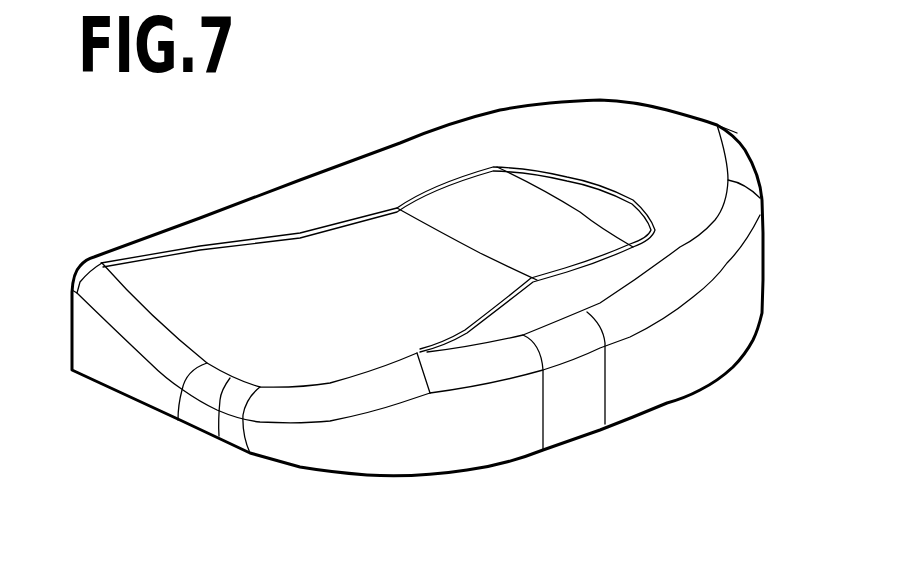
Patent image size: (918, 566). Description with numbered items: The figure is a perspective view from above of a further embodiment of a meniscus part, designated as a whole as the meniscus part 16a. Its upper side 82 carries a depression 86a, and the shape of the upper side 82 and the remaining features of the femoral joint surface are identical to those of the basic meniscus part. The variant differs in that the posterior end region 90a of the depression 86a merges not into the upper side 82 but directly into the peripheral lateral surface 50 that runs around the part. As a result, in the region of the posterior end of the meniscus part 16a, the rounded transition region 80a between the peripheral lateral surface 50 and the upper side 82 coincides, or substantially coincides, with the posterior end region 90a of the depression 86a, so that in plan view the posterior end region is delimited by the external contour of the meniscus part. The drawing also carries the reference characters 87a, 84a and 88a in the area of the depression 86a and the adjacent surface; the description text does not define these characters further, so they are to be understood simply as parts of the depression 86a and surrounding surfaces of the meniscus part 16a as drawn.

The meniscus part 16a is at (686, 91).
The upper side 82 is at (622, 123).
The depression 86a is at (287, 283).
The recess side wall 87a is at (400, 213).
The recess floor 84a is at (553, 247).
The right top surface 88a is at (633, 203).
The peripheral lateral surface 50 is at (127, 372).
The posterior end region 90a is at (178, 420).
The transition region 80a is at (250, 453).